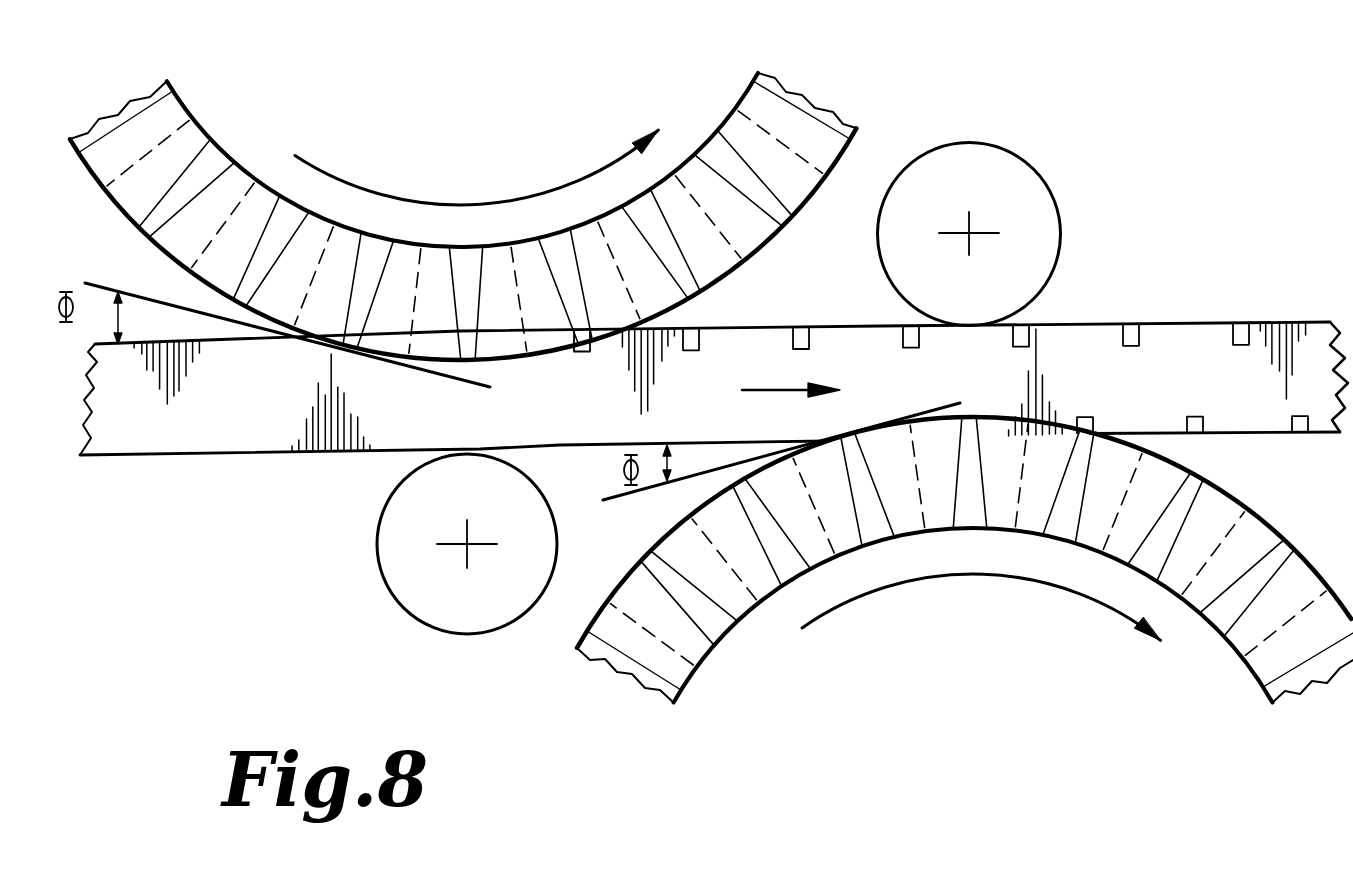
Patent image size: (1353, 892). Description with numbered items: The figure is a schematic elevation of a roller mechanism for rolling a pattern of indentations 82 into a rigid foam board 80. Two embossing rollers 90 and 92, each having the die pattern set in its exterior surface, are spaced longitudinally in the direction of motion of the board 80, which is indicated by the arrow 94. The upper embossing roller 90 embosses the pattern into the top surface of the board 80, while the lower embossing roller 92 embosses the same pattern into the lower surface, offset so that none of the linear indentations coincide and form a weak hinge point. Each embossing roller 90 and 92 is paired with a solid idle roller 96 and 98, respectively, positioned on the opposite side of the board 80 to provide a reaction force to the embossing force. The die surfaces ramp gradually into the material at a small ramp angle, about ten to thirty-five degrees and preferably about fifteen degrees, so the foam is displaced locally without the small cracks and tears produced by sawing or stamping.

The foam board 80 is at (168, 436).
The pattern of indentations 82 is at (1130, 322).
The embossing roller 90 is at (612, 205).
The embossing roller 92 is at (753, 607).
The arrow 94 is at (768, 392).
The solid idle roller 96 is at (428, 608).
The solid idle roller 98 is at (1034, 168).